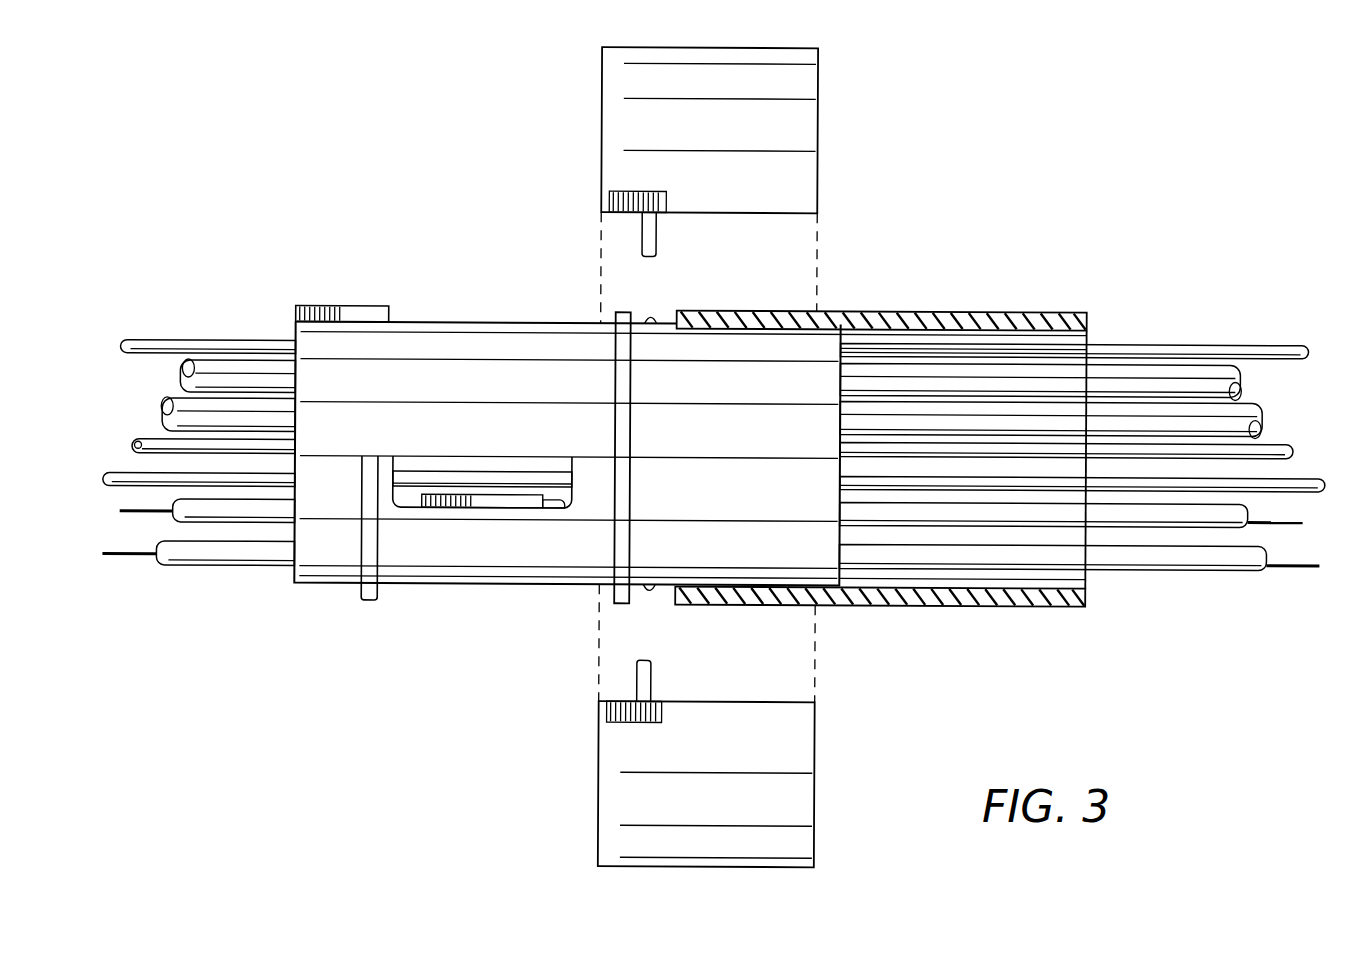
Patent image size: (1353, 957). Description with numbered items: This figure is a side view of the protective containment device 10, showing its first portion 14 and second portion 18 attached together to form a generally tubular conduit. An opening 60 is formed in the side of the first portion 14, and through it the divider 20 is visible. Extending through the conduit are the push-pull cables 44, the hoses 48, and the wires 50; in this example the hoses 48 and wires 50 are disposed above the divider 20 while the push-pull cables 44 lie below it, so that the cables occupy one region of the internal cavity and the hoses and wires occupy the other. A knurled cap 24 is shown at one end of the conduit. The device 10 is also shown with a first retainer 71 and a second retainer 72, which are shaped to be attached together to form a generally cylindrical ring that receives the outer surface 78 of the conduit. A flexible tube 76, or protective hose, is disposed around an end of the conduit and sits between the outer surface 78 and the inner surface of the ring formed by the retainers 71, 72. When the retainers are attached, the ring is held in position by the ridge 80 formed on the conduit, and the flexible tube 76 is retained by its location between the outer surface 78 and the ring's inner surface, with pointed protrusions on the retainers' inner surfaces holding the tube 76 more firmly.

The protective containment device 10 is at (449, 200).
The first portion 14 is at (441, 572).
The second portion 18 is at (452, 340).
The divider 20 is at (508, 505).
The knurled cap 24 is at (342, 307).
The push-pull cables 44 is at (205, 518).
The hoses 48 is at (183, 375).
The wires 50 is at (146, 343).
The opening 60 is at (405, 458).
The first retainer 71 is at (818, 128).
The second retainer 72 is at (814, 748).
The flexible tube 76 is at (912, 310).
The outer surface 78 is at (653, 318).
The ridge 80 is at (617, 389).